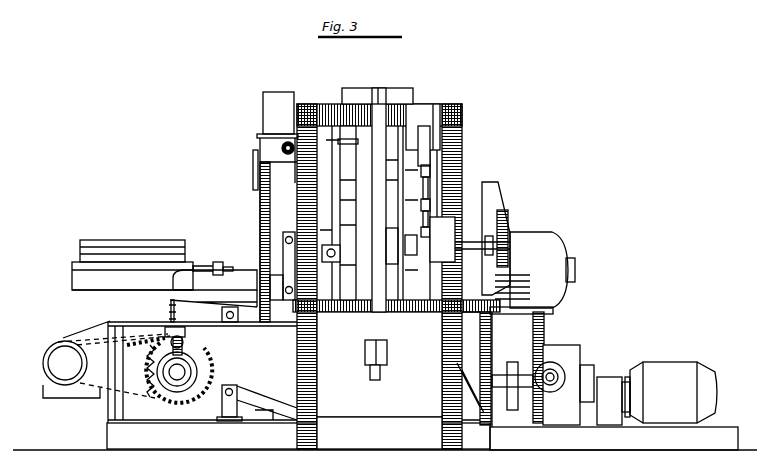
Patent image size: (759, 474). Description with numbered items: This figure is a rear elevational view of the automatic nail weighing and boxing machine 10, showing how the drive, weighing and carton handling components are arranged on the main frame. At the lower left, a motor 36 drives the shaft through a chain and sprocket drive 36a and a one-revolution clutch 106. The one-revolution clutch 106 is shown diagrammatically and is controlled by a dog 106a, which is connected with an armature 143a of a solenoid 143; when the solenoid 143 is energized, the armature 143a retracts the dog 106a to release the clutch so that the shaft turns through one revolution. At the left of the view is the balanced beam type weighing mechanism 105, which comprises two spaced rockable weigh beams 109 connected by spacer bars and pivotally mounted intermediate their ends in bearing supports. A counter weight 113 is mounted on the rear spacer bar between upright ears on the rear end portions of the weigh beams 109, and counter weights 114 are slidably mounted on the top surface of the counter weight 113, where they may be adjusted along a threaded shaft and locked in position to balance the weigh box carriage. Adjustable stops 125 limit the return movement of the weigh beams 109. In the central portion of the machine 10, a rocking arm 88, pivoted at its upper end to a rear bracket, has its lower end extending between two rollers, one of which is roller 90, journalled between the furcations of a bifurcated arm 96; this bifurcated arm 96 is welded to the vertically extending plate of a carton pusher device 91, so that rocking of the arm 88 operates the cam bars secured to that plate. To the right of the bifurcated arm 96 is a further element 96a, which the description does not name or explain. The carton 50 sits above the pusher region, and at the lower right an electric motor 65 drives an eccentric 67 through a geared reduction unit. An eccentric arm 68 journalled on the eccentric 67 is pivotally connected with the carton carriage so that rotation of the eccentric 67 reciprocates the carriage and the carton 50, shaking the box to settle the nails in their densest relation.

The automatic nail weighing and boxing machine 10 is at (471, 154).
The carton 50 is at (405, 102).
The motor 96a is at (560, 251).
The bifurcated arm 96 is at (366, 352).
The roller 90 is at (388, 352).
The rocking arm 88 is at (385, 376).
The carton pusher device 91 is at (385, 422).
The eccentric arm 68 is at (498, 378).
The eccentric 67 is at (555, 368).
The electric motor 65 is at (675, 398).
The counter weights 114 is at (86, 244).
The counter weight 113 is at (70, 280).
The weighing mechanism 105 is at (69, 290).
The weigh beams 109 is at (242, 290).
The adjustable stops 125 is at (171, 308).
The motor 36 is at (50, 358).
The chain and sprocket drive 36a is at (64, 392).
The dog 106a is at (172, 343).
The solenoid 143 is at (192, 333).
The armature 143a is at (186, 352).
The one-revolution clutch 106 is at (188, 375).